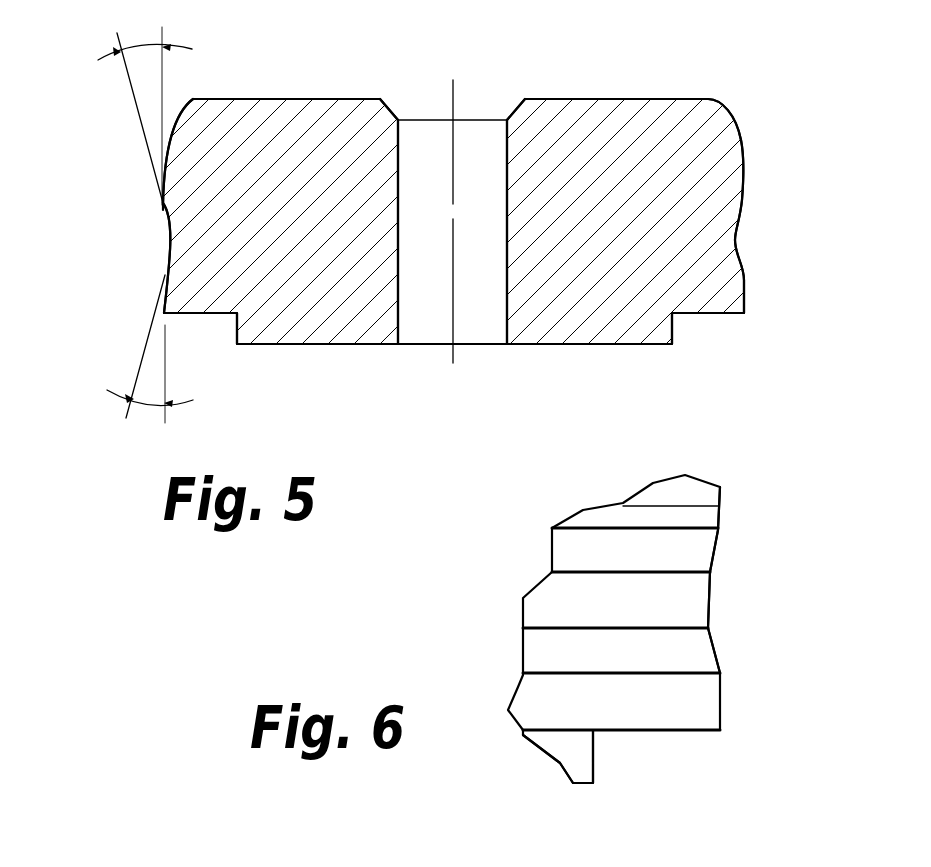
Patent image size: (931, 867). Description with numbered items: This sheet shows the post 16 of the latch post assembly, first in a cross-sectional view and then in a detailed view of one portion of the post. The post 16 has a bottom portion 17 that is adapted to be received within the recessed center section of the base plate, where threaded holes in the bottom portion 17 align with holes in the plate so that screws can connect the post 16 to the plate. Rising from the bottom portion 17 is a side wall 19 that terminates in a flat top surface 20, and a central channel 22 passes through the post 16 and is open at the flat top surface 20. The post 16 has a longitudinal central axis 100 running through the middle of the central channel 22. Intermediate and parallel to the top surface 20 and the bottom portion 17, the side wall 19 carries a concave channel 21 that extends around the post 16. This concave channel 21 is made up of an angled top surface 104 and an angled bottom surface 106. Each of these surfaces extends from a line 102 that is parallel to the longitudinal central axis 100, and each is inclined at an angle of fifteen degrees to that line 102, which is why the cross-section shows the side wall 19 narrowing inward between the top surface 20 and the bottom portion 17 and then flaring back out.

In FIG. 5, the post 16 is at (361, 379).
In FIG. 5, the bottom portion 17 is at (653, 345).
In FIG. 6, the bottom portion 17 is at (597, 762).
In FIG. 5, the side wall 19 is at (745, 167).
In FIG. 6, the side wall 19 is at (722, 531).
In FIG. 5, the flat top surface 20 is at (621, 97).
In FIG. 5, the concave channel 21 is at (738, 240).
In FIG. 6, the concave channel 21 is at (715, 610).
In FIG. 5, the central channel 22 is at (430, 172).
In FIG. 5, the longitudinal central axis 100 is at (452, 310).
In FIG. 5, the line 102 is at (163, 90).
In FIG. 5, the angled top surface 104 is at (163, 203).
In FIG. 5, the angled bottom surface 106 is at (165, 268).